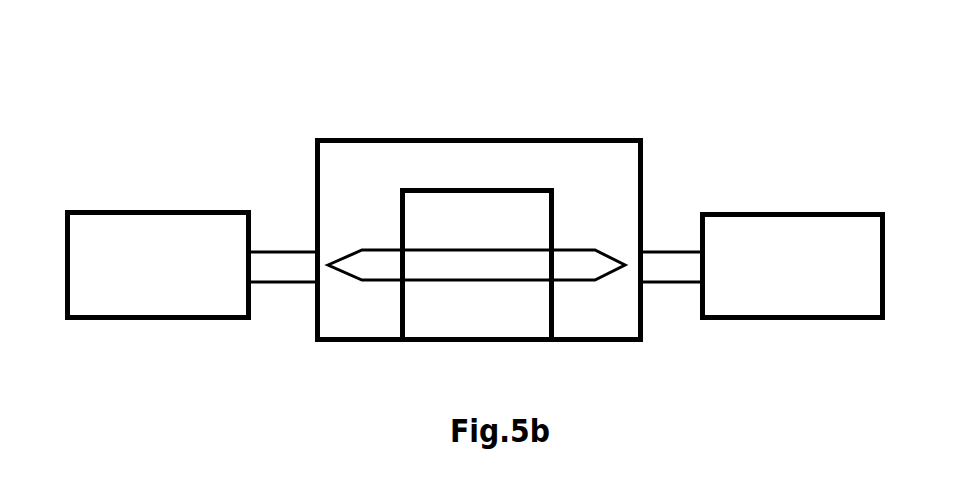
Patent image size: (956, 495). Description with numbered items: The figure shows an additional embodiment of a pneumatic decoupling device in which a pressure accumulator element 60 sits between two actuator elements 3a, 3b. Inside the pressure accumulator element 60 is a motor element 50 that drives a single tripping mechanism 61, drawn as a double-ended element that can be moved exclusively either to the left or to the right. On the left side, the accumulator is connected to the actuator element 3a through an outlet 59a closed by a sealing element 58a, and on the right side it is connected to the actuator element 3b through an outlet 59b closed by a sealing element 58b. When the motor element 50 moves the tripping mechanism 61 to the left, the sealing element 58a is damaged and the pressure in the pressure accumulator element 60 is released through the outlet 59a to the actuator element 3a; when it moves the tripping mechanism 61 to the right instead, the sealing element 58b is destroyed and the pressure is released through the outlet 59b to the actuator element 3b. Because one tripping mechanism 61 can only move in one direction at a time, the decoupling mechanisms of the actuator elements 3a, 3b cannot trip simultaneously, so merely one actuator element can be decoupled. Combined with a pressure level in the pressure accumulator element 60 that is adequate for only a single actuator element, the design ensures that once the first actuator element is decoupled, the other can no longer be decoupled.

The actuator element 3a is at (162, 295).
The actuator element 3b is at (787, 227).
The pressure accumulator element 60 is at (394, 158).
The motor element 50 is at (415, 217).
The tripping mechanism 61 is at (482, 263).
The outlet 59a is at (283, 267).
The sealing element 58a is at (312, 262).
The outlet 59b is at (667, 263).
The sealing element 58b is at (642, 262).